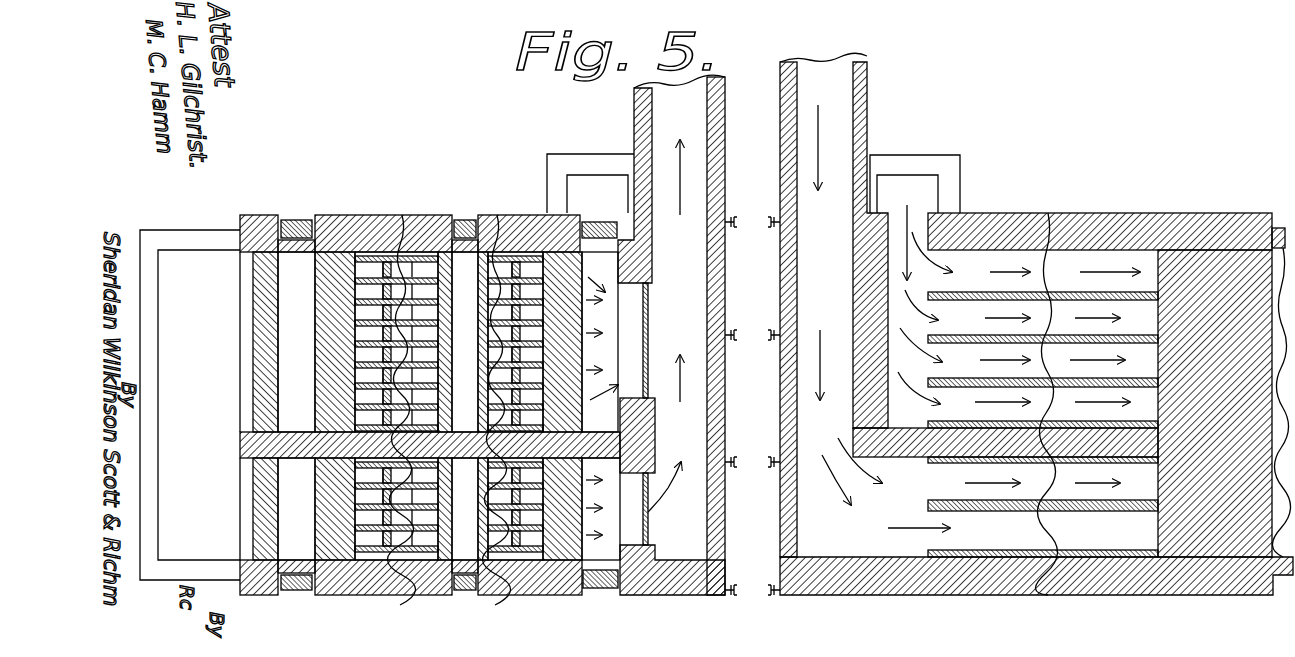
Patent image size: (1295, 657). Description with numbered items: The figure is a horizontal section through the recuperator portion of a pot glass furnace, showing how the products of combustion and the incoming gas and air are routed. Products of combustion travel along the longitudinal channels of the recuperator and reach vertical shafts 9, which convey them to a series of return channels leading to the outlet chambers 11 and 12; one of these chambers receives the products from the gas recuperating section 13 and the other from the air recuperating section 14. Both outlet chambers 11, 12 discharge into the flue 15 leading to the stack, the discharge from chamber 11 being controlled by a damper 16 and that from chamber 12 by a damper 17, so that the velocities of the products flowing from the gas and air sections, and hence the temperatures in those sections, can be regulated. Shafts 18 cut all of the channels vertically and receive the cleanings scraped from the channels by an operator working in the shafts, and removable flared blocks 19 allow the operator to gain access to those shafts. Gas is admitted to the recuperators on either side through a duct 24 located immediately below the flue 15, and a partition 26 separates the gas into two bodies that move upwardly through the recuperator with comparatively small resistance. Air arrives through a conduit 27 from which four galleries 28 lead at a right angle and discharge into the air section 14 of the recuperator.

The vertical shaft 9 is at (296, 406).
The outlet chamber 11 is at (604, 509).
The outlet chamber 12 is at (680, 298).
The gas recuperating section 13 is at (433, 525).
The air recuperating section 14 is at (430, 245).
The flue 15 is at (671, 335).
The damper 16 is at (648, 512).
The damper 17 is at (645, 312).
The shaft 18 is at (465, 406).
The removable flared block 19 is at (292, 222).
The duct 24 is at (834, 305).
The partition 26 is at (1110, 503).
The conduit 27 is at (570, 190).
The gallery 28 is at (1043, 367).